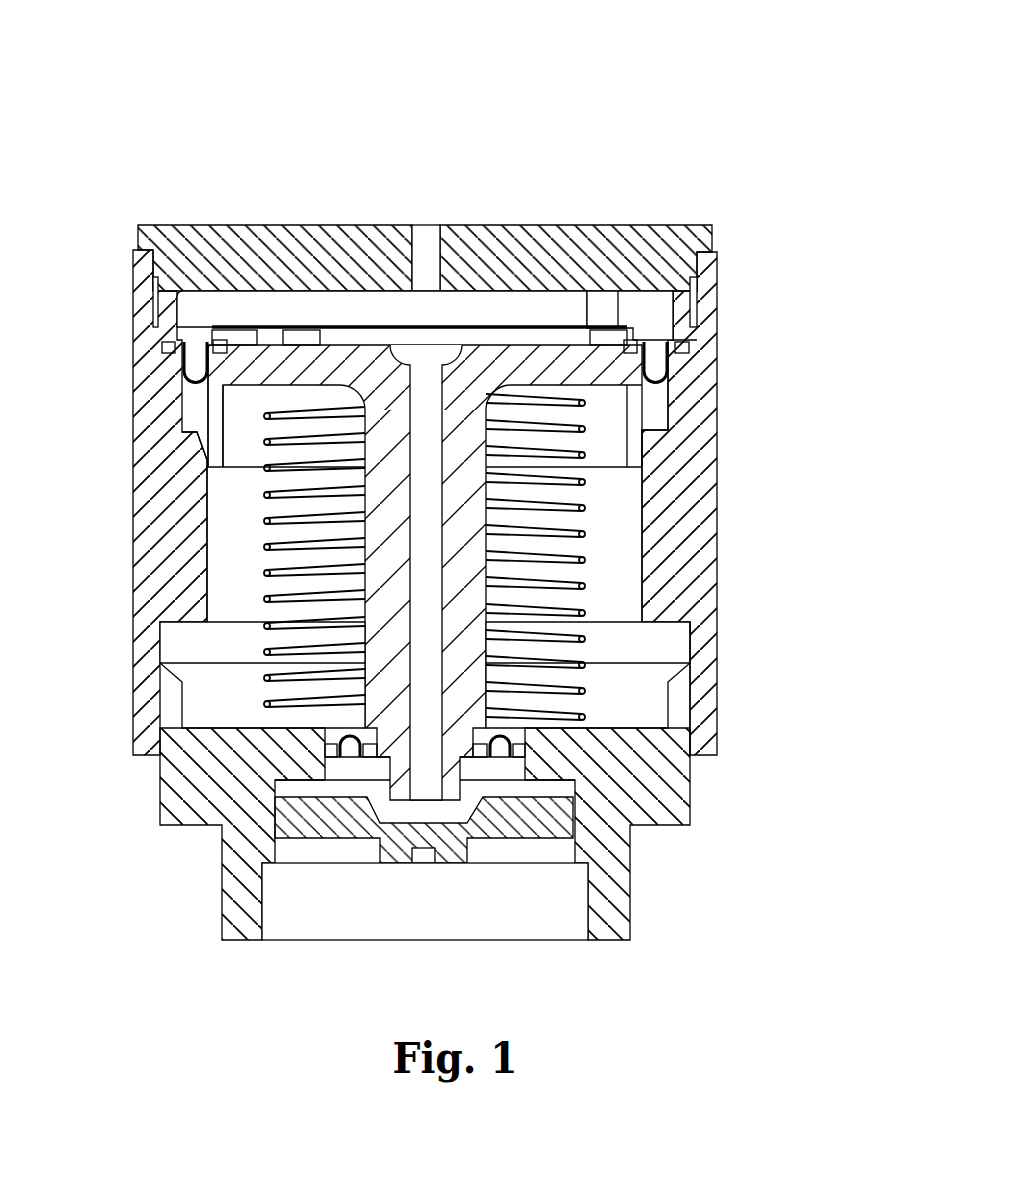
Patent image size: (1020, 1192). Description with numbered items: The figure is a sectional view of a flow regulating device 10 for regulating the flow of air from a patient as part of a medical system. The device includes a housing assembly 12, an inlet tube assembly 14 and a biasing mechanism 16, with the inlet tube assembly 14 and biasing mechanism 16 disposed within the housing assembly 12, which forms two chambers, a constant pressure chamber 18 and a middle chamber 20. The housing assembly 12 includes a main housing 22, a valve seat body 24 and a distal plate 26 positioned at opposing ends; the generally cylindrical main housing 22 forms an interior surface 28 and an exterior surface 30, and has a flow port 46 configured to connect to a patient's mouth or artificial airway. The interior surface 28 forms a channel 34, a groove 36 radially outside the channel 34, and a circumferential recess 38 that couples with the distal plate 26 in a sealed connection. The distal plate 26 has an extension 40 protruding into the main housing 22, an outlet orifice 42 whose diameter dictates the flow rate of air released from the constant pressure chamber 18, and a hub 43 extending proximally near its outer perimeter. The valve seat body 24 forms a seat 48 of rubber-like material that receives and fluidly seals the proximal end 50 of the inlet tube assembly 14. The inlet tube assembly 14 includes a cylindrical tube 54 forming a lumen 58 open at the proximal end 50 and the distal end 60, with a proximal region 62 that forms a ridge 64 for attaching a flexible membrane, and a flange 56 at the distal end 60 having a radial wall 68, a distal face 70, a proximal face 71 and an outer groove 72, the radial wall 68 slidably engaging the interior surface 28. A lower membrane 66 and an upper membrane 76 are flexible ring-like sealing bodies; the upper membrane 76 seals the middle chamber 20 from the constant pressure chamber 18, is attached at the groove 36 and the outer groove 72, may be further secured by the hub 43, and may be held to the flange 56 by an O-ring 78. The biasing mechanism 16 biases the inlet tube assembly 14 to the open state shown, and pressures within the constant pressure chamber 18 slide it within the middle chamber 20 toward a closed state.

The flow regulating device 10 is at (613, 81).
The housing assembly 12 is at (792, 466).
The inlet tube assembly 14 is at (486, 578).
The biasing mechanism 16 is at (630, 532).
The constant pressure chamber 18 is at (185, 314).
The middle chamber 20 is at (222, 543).
The main housing 22 is at (690, 630).
The valve seat body 24 is at (387, 847).
The distal plate 26 is at (588, 228).
The interior surface 28 is at (695, 568).
The exterior surface 30 is at (695, 680).
The channel 34 is at (682, 395).
The groove 36 is at (692, 345).
The circumferential recess 38 is at (700, 290).
The extension 40 is at (625, 318).
The outlet orifice 42 is at (428, 232).
The hub 43 is at (688, 310).
The flow port 46 is at (630, 890).
The seat 48 is at (457, 812).
The proximal end 50 is at (482, 790).
The tube 54 is at (387, 513).
The flange 56 is at (268, 360).
The lumen 58 is at (438, 802).
The distal end 60 is at (383, 347).
The proximal region 62 is at (387, 563).
The ridge 64 is at (358, 765).
The lower membrane 66 is at (335, 740).
The radial wall 68 is at (218, 466).
The distal face 70 is at (507, 347).
The proximal face 71 is at (237, 420).
The outer groove 72 is at (178, 347).
The upper membrane 76 is at (188, 372).
The O-ring 78 is at (229, 340).